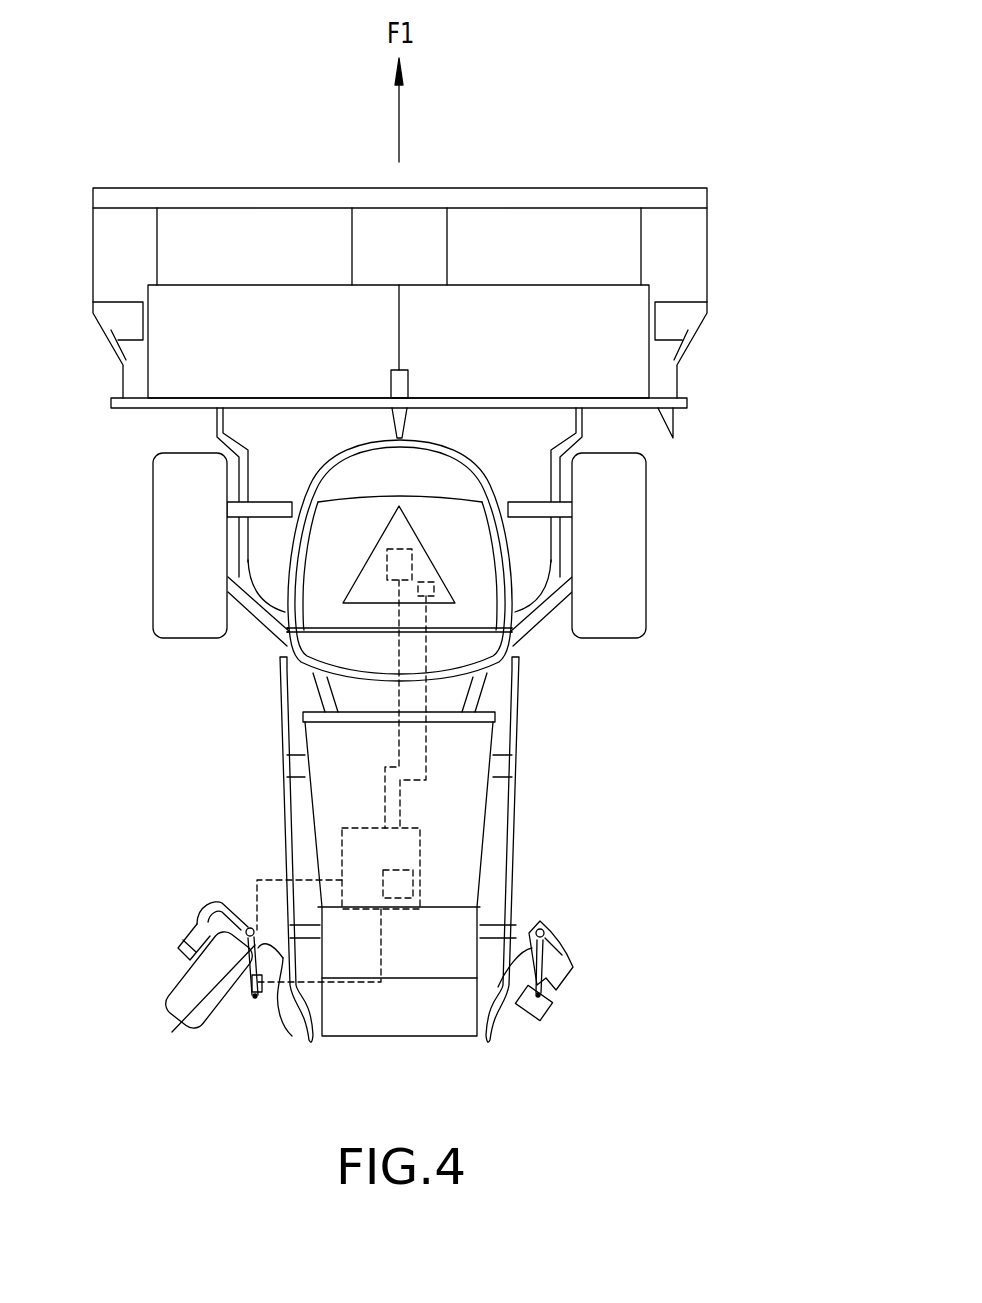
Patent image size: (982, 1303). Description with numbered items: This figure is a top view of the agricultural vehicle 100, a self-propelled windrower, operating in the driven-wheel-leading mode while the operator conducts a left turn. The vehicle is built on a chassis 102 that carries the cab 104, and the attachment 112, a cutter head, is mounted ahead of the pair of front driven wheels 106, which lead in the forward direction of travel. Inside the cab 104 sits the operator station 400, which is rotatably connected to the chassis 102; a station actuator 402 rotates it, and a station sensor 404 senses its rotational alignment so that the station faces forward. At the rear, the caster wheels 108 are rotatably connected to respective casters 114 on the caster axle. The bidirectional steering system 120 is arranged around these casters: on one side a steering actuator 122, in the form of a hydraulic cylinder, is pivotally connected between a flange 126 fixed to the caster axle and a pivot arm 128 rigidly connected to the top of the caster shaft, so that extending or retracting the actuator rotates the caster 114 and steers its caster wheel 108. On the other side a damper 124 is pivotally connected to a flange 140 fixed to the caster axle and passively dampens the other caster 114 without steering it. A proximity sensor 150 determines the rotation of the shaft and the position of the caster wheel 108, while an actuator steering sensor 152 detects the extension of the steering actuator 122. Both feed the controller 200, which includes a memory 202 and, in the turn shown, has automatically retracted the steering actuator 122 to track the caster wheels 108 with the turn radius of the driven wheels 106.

The agricultural vehicle 100 is at (722, 477).
The chassis 102 is at (517, 730).
The cab 104 is at (458, 463).
The driven wheels 106 is at (153, 545).
The caster wheels 108 is at (180, 1013).
The attachment 112 is at (708, 248).
The caster 114 is at (184, 928).
The bidirectional steering system 120 is at (208, 890).
The steering actuator 122 is at (292, 1036).
The damper 124 is at (568, 990).
The flange 126 is at (257, 950).
The pivot arm 128 is at (249, 927).
The flange 140 is at (533, 950).
The proximity sensor 150 is at (246, 958).
The actuator steering sensor 152 is at (255, 998).
The controller 200 is at (420, 850).
The memory 202 is at (413, 883).
The operator station 400 is at (369, 604).
The station actuator 402 is at (387, 567).
The station sensor 404 is at (435, 593).